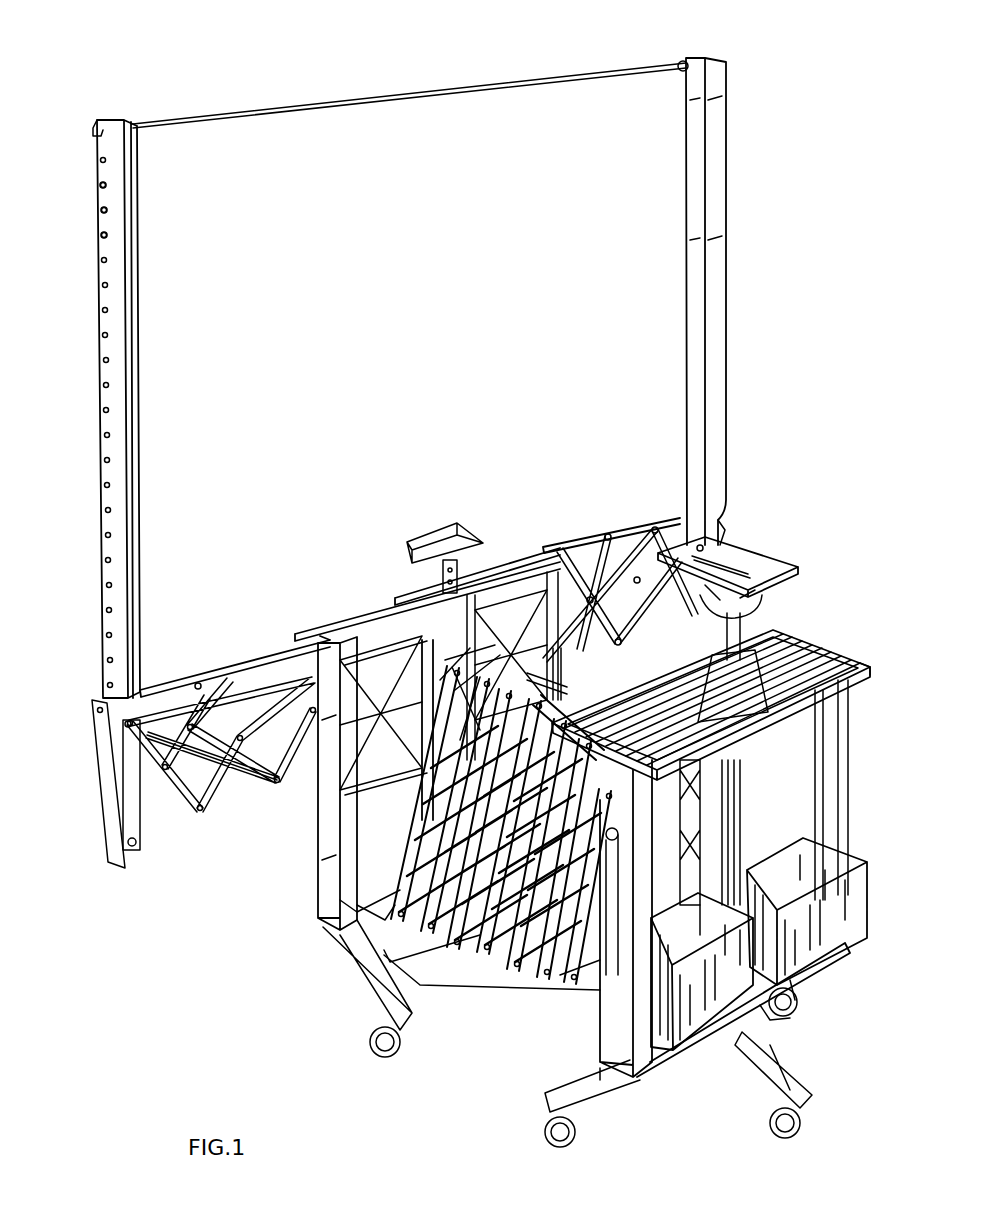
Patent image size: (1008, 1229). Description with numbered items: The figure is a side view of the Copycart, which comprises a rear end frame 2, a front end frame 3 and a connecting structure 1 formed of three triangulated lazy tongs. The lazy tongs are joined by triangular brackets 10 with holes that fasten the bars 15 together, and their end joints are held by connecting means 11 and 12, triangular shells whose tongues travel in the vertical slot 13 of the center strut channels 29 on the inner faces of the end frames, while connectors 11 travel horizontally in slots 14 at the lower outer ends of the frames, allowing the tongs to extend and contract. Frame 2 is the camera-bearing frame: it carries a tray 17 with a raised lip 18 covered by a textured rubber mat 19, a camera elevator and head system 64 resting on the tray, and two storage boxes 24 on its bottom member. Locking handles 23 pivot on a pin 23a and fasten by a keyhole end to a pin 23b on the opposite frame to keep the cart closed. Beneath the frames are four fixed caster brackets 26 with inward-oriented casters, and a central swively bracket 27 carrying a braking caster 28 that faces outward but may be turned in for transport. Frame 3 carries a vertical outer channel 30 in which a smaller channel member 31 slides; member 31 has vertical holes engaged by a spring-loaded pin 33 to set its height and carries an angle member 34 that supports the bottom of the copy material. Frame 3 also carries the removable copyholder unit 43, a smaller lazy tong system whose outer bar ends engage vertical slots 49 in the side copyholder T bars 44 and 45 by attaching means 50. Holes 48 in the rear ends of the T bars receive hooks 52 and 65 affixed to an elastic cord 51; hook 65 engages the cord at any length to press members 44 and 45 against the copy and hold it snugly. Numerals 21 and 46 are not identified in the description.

The connecting structure 1 is at (540, 1005).
The rear end frame 2 is at (838, 750).
The front end frame 3 is at (318, 865).
The brackets 10 is at (585, 690).
The connecting means 11 is at (386, 895).
The connecting means 12 is at (705, 780).
The vertical slot 13 is at (370, 618).
The slots 14 is at (370, 915).
The bars 15 is at (270, 648).
The tray 17 is at (790, 640).
The raised edge or lip 18 is at (845, 660).
The textured rubber mat 19 is at (830, 665).
The leg 21 is at (845, 790).
The locking handles 23 is at (600, 990).
The pin 23a is at (560, 968).
The pin 23b is at (318, 770).
The storage boxes 24 is at (713, 1002).
The caster-supporting fixed brackets 26 is at (360, 975).
The swively bracket 27 is at (785, 1060).
The braking casters 28 is at (552, 1145).
The center strut channel 29 is at (560, 675).
The channel 30 is at (425, 700).
The channel member 31 is at (220, 778).
The pin 33 is at (485, 560).
The angle member 34 is at (445, 530).
The copyholder unit 43 is at (206, 985).
The side copyholder T bar 44 is at (125, 398).
The side copyholder T bar 45 is at (725, 250).
The scissor assembly 46 is at (655, 530).
The holes 48 is at (104, 235).
The vertical slots 49 is at (718, 520).
The attaching means 50 is at (140, 855).
The elastic cord 51 is at (405, 96).
The hook 52 is at (96, 125).
The camera elevator and head system 64 is at (770, 560).
The hook 65 is at (680, 63).